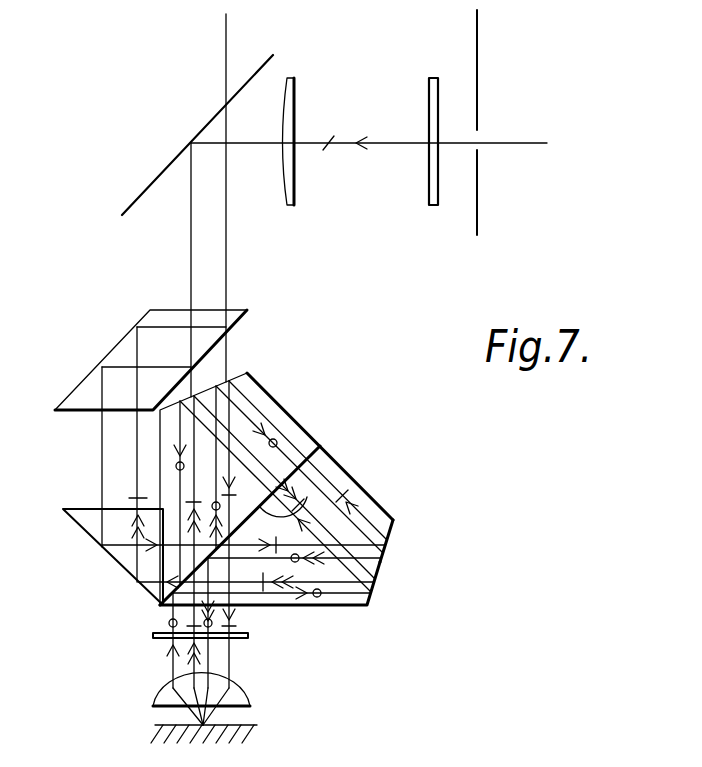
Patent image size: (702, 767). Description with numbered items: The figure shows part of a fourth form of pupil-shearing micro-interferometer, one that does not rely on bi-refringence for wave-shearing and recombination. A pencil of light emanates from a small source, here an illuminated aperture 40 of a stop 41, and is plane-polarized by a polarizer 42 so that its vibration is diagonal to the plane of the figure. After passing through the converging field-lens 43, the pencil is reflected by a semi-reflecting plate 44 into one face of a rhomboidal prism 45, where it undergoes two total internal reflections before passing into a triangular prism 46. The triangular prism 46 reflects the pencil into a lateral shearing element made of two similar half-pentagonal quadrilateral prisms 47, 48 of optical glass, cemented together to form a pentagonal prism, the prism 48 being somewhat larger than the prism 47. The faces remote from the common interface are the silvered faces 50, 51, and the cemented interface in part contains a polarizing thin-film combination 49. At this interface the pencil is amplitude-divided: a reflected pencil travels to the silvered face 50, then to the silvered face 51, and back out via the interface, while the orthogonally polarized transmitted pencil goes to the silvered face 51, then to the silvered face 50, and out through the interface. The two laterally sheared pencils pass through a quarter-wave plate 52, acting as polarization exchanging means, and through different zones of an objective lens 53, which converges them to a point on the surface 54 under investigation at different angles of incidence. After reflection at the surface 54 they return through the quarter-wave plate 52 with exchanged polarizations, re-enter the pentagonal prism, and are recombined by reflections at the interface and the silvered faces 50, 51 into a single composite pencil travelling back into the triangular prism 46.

The illuminated aperture 40 is at (478, 137).
The stop 41 is at (478, 53).
The polarizer 42 is at (438, 78).
The converging field-lens 43 is at (295, 78).
The semi-reflecting plate 44 is at (135, 201).
The rhomboidal prism 45 is at (148, 320).
The triangular prism 46 is at (80, 509).
The half-pentagonal quadrilateral prism 47 is at (280, 418).
The half-pentagonal quadrilateral prism 48 is at (395, 523).
The polarizing thin-film combination 49 is at (328, 487).
The silvered face 50 is at (317, 464).
The silvered face 51 is at (383, 569).
The quarter-wave plate 52 is at (250, 637).
The objective lens 53 is at (250, 698).
The surface under investigation 54 is at (252, 724).